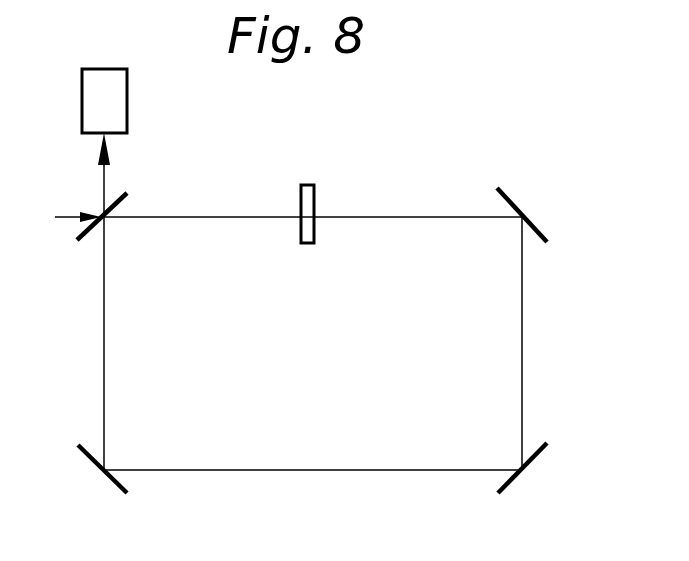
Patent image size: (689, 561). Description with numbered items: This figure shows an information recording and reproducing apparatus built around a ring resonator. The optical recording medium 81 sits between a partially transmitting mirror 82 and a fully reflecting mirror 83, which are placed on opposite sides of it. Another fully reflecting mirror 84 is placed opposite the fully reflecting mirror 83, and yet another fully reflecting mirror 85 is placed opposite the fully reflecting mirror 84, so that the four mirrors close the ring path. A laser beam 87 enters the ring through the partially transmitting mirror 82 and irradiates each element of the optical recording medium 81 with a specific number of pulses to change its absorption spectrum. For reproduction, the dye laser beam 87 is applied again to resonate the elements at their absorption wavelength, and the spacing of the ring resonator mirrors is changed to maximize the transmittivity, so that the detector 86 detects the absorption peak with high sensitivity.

The optical recording medium 81 is at (316, 197).
The partially transmitting mirror 82 is at (88, 243).
The fully reflecting mirror 83 is at (537, 222).
The fully reflecting mirror 84 is at (537, 455).
The fully reflecting mirror 85 is at (80, 455).
The detector 86 is at (127, 84).
The laser beam 87 is at (65, 213).